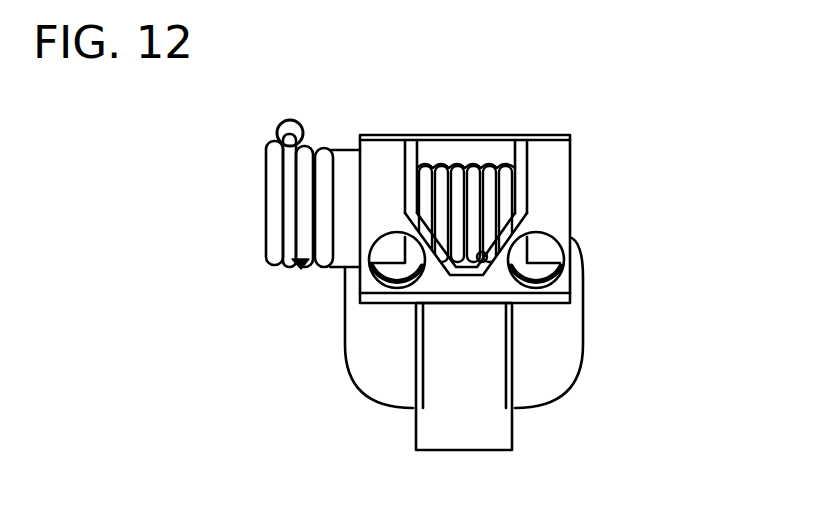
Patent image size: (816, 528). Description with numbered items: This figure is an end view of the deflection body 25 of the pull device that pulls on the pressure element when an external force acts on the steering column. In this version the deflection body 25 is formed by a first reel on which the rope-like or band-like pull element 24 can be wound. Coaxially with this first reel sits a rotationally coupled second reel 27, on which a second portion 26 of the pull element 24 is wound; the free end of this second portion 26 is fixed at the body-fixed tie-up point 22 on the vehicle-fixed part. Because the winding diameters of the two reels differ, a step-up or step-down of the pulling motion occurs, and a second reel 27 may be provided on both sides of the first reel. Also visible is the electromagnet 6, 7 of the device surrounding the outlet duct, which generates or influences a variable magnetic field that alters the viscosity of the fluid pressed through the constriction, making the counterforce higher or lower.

The electromagnet 6 is at (558, 335).
The electromagnet 7 is at (480, 388).
The tie-up point 22 is at (298, 127).
The pull element 24 is at (462, 155).
The deflection body 25 is at (503, 192).
The second portion of the pull element 26 is at (292, 162).
The second reel 27 is at (300, 266).